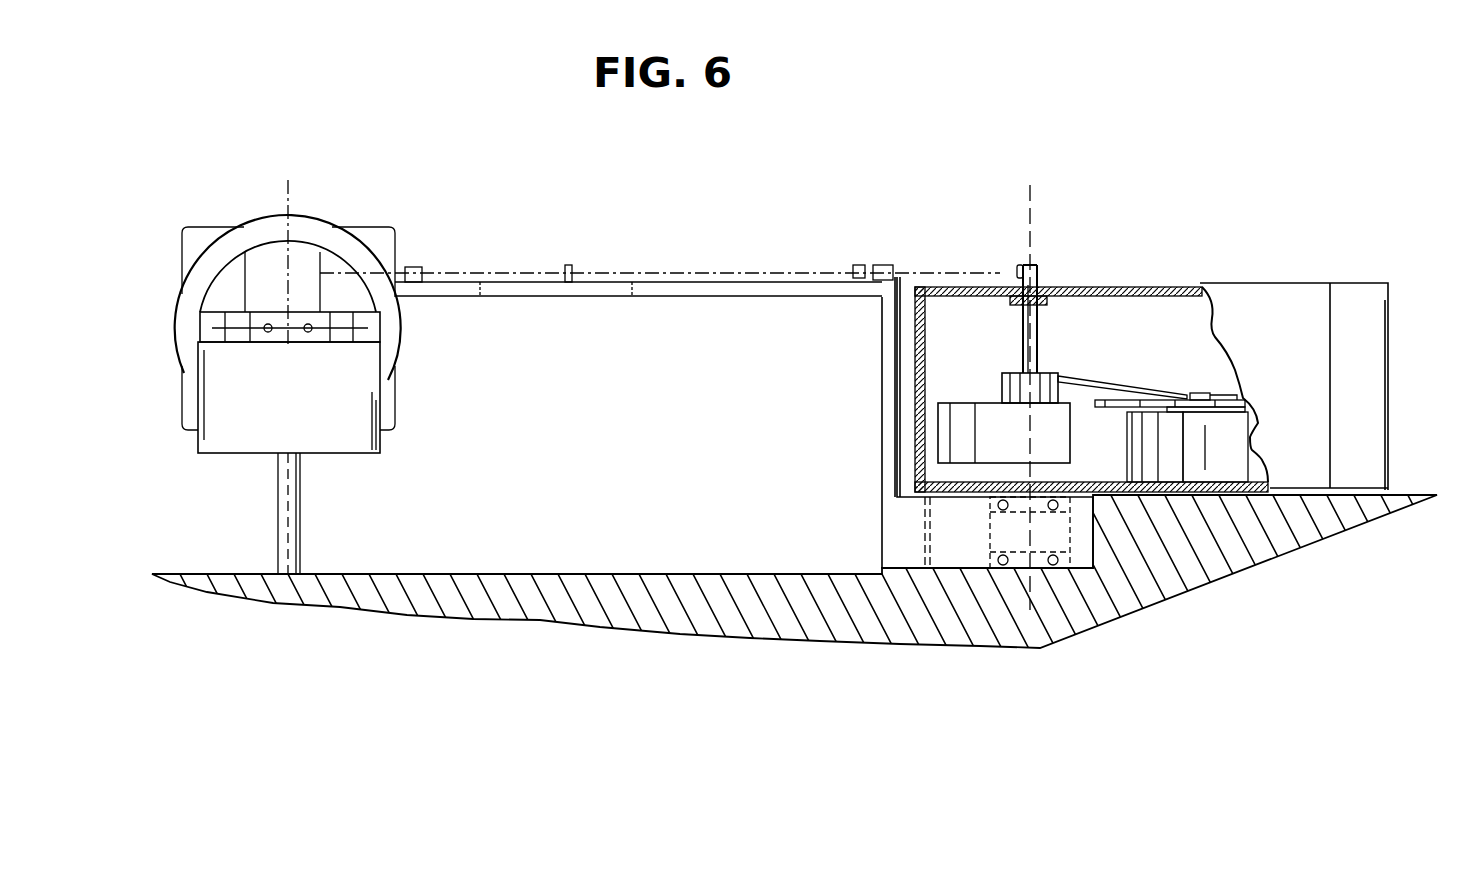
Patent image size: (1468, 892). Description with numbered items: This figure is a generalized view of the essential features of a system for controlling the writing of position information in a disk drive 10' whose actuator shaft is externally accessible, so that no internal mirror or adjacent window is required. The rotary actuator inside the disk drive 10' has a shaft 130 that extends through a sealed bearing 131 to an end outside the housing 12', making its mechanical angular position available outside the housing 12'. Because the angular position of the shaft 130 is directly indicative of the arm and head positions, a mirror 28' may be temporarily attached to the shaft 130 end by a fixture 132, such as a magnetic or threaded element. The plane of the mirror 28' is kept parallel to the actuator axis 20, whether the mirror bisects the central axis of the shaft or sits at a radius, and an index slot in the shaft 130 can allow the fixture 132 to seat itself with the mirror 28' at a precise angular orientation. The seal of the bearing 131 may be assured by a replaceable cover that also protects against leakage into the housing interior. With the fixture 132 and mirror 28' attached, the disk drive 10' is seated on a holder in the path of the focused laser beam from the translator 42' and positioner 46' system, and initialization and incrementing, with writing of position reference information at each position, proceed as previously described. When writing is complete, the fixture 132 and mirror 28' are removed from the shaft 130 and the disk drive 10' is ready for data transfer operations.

The positioner 46' is at (288, 345).
The translator 42' is at (660, 241).
The actuator axis 20 is at (1032, 185).
The mirror 28' is at (990, 285).
The fixture 132 is at (1039, 288).
The shaft 130 is at (1040, 328).
The sealed bearing 131 is at (1020, 298).
The disk drive 10' is at (1294, 328).
The housing 12' is at (1147, 349).